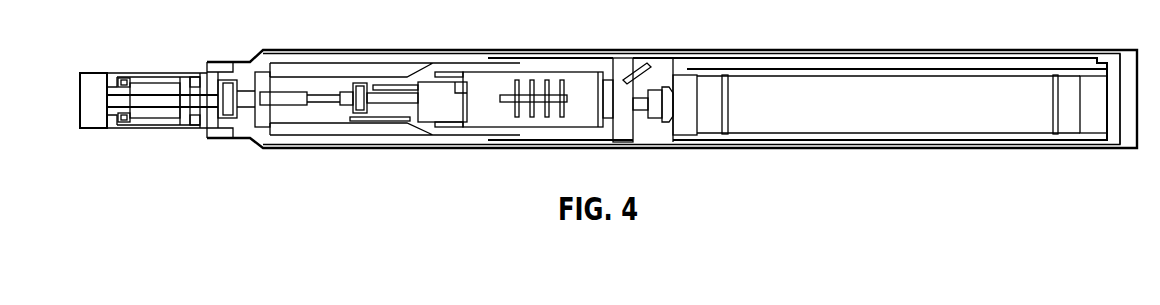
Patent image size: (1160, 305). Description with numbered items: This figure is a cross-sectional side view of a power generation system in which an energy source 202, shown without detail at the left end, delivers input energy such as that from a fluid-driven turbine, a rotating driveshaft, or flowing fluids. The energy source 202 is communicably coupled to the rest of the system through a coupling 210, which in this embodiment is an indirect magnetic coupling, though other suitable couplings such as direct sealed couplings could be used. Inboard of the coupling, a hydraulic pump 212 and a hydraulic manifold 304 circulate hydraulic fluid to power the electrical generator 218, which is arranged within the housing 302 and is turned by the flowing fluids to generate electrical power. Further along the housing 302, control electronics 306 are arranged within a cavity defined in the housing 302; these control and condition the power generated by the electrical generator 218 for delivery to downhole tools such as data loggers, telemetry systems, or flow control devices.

The energy source 202 is at (207, 53).
The coupling 210 is at (153, 118).
The hydraulic pump 212 is at (323, 117).
The electrical generator 218 is at (488, 85).
The housing 302 is at (720, 143).
The hydraulic manifold 304 is at (412, 74).
The control electronics 306 is at (868, 117).